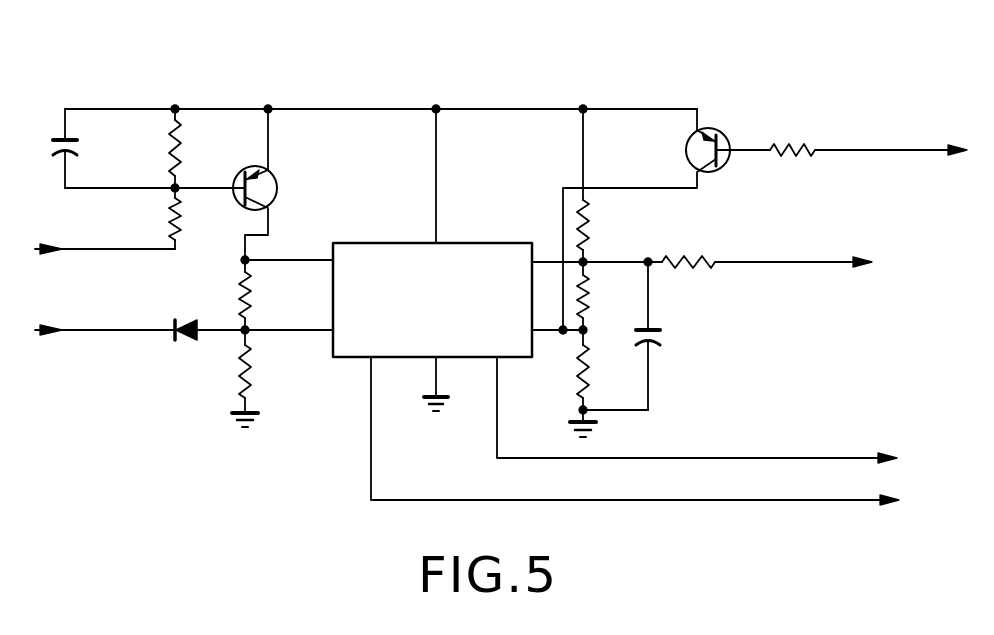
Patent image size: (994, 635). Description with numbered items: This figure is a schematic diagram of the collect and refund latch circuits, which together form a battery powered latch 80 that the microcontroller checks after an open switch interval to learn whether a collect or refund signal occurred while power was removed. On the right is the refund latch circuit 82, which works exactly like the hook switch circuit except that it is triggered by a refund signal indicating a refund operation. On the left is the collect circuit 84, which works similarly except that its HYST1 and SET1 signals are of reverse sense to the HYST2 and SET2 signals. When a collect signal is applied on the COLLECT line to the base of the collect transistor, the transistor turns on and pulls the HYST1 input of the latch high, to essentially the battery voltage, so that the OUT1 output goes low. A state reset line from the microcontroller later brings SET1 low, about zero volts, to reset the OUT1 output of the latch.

The battery powered latch 80 is at (547, 78).
The refund latch circuit 82 is at (650, 89).
The collect circuit 84 is at (337, 93).